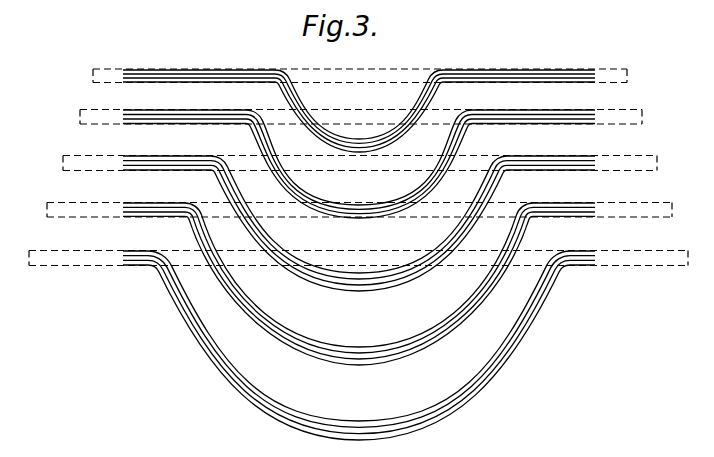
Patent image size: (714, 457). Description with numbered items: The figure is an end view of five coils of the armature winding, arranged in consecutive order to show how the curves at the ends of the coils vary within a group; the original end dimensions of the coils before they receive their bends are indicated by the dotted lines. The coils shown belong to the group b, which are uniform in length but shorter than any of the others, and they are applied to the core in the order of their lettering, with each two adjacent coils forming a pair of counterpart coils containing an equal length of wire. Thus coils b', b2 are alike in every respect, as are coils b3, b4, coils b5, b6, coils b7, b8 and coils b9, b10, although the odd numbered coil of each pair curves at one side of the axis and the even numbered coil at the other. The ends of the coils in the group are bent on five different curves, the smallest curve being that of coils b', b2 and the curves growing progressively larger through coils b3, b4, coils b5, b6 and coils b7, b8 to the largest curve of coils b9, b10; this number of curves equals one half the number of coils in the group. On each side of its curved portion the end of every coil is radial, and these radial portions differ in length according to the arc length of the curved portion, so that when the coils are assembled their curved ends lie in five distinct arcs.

The coil b' is at (359, 106).
The coil b2 is at (359, 115).
The coil b3 is at (359, 159).
The coil b4 is at (359, 168).
The coil b5 is at (359, 217).
The coil b6 is at (359, 228).
The coil b7 is at (359, 278).
The coil b8 is at (359, 288).
The coil b9 is at (359, 339).
The coil b10 is at (359, 350).